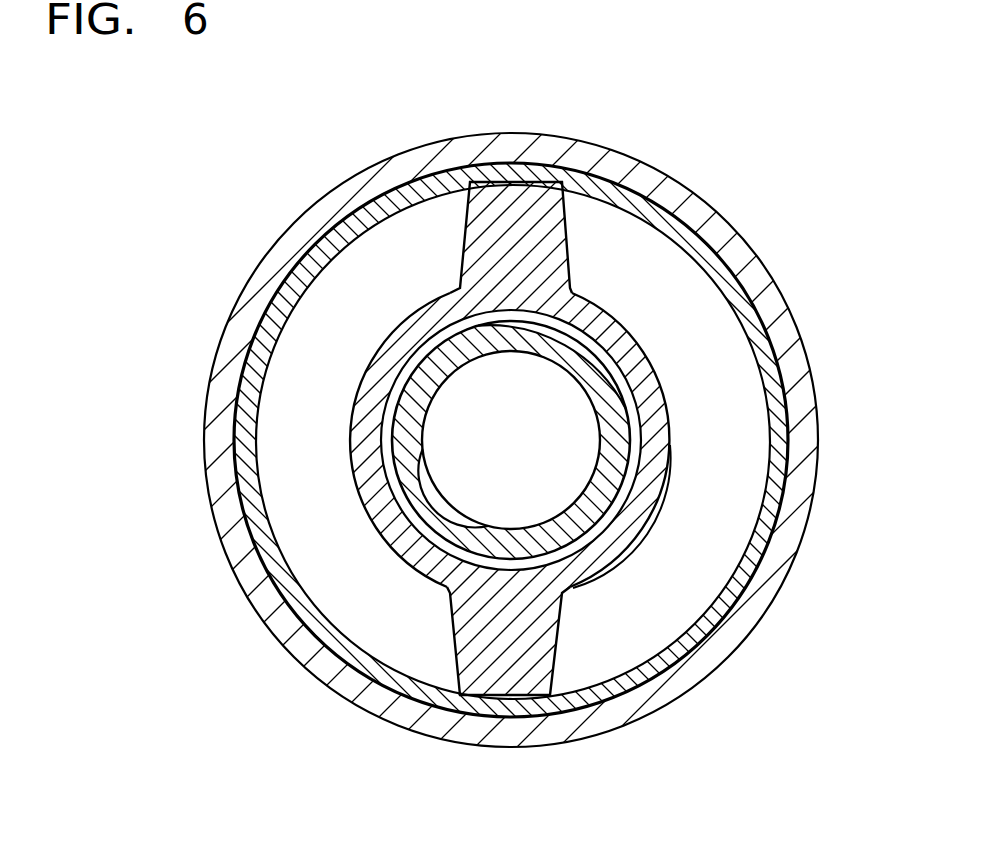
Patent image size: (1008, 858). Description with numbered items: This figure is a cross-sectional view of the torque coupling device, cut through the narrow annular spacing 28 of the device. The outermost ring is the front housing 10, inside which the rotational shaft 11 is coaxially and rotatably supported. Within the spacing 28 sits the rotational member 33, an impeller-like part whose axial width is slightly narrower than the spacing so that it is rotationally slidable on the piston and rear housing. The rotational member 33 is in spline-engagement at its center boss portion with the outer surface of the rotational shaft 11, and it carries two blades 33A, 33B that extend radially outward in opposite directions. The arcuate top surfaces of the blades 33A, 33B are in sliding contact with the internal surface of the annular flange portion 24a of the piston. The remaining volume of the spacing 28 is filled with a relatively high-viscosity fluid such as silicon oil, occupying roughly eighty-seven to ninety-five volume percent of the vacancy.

The front housing 10 is at (337, 208).
The rotational shaft 11 is at (615, 446).
The annular flange portion 24a is at (690, 635).
The annular spacing 28 is at (357, 605).
The rotational member 33 is at (370, 440).
The blade 33A is at (527, 195).
The blade 33B is at (505, 678).